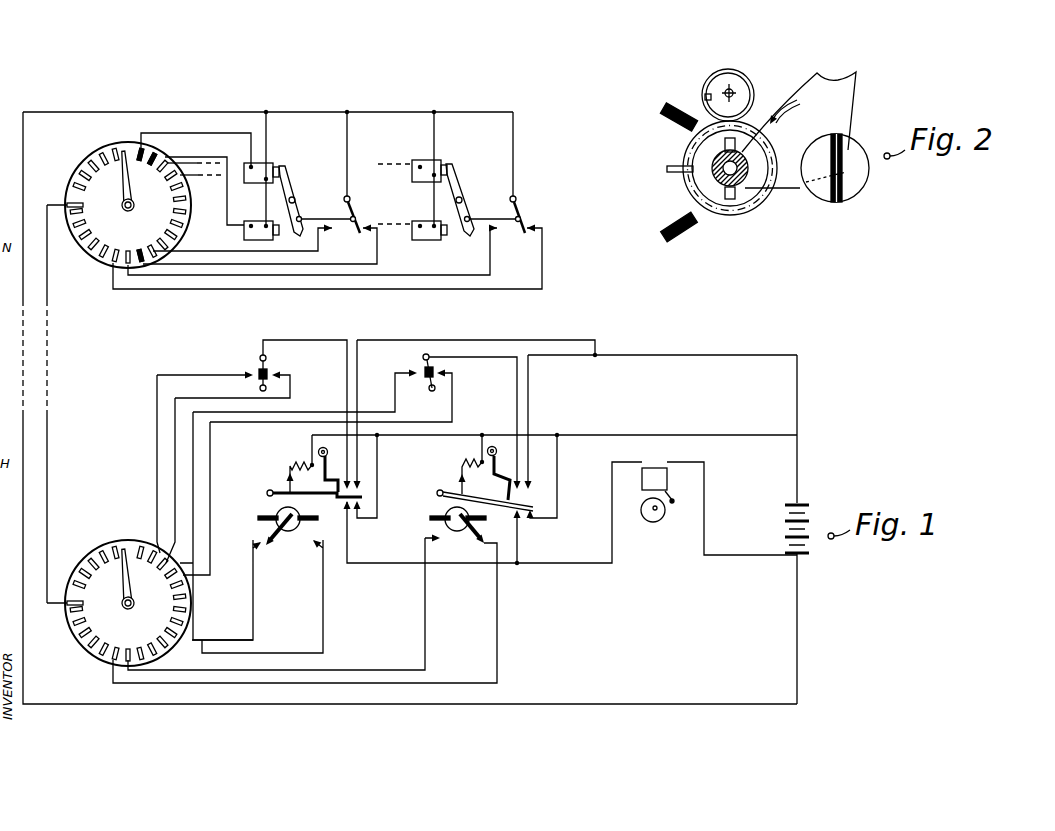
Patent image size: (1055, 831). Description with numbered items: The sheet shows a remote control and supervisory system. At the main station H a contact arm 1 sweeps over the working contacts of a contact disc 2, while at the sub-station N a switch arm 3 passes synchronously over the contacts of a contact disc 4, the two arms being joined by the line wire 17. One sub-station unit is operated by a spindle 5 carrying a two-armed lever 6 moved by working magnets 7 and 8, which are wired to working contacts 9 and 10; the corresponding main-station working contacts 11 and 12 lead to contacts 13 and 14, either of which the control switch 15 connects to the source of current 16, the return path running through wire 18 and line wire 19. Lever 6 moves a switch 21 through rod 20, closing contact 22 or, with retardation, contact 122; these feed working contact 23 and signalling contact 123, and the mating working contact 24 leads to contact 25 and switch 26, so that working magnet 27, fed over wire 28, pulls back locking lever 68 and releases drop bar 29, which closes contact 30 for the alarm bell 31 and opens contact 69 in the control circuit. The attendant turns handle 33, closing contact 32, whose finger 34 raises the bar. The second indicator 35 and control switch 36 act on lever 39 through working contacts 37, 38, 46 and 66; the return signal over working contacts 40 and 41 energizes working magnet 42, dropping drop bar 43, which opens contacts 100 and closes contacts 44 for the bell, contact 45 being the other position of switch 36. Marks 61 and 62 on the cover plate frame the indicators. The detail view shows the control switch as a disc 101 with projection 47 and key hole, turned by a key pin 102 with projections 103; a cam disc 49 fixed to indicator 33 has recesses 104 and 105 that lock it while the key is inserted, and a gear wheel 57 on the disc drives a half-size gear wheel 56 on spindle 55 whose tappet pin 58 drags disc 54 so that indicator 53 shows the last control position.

In FIG. 1, the contact arm 1 is at (130, 585).
In FIG. 1, the contact disc 2 is at (119, 629).
In FIG. 1, the switch arm 3 is at (128, 185).
In FIG. 1, the contact disc 4 is at (152, 222).
In FIG. 1, the spindle 5 is at (303, 204).
In FIG. 1, the two-armed lever 6 is at (292, 182).
In FIG. 1, the working magnet 7 is at (251, 165).
In FIG. 1, the working magnet 8 is at (245, 236).
In FIG. 1, the working contact 9 is at (141, 150).
In FIG. 1, the working contact 10 is at (162, 160).
In FIG. 1, the working contact 11 is at (150, 548).
In FIG. 1, the working contact 12 is at (168, 560).
In FIG. 1, the contact 13 is at (252, 373).
In FIG. 2, the contact 13 is at (668, 122).
In FIG. 1, the contact 14 is at (278, 377).
In FIG. 2, the contact 14 is at (670, 222).
In FIG. 1, the control switch 15 is at (258, 383).
In FIG. 1, the source of current 16 is at (785, 527).
In FIG. 1, the line wire 17 is at (47, 352).
In FIG. 1, the wire 18 is at (289, 143).
In FIG. 1, the line wire 19 is at (23, 352).
In FIG. 1, the rod 20 is at (330, 212).
In FIG. 1, the switch 21 is at (355, 208).
In FIG. 1, the contact 22 is at (332, 229).
In FIG. 1, the working contact 23 is at (160, 247).
In FIG. 1, the working contact 24 is at (155, 650).
In FIG. 1, the contact 25 is at (255, 549).
In FIG. 1, the switch 26 is at (272, 524).
In FIG. 1, the working magnet 27 is at (293, 463).
In FIG. 1, the wire 28 is at (598, 430).
In FIG. 1, the drop bar 29 is at (350, 489).
In FIG. 1, the contact 30 is at (347, 505).
In FIG. 1, the alarm bell 31 is at (648, 518).
In FIG. 1, the contact 32 is at (314, 543).
In FIG. 1, the handle 33 is at (280, 505).
In FIG. 2, the handle 33 is at (857, 150).
In FIG. 1, the finger 34 is at (296, 509).
In FIG. 1, the position indicator 35 is at (448, 527).
In FIG. 1, the control switch 36 is at (430, 360).
In FIG. 1, the working contact 37 is at (190, 600).
In FIG. 1, the working contact 38 is at (176, 177).
In FIG. 1, the lever 39 is at (460, 184).
In FIG. 1, the working contact 40 is at (112, 264).
In FIG. 1, the working contact 41 is at (110, 655).
In FIG. 1, the working magnet 42 is at (463, 464).
In FIG. 1, the drop bar 43 is at (500, 489).
In FIG. 1, the contacts 44 is at (528, 512).
In FIG. 1, the contact 45 is at (402, 373).
In FIG. 1, the working contact 46 is at (183, 578).
In FIG. 2, the projection 47 is at (670, 172).
In FIG. 2, the cam disc 49 is at (789, 113).
In FIG. 2, the indicator 53 is at (733, 90).
In FIG. 2, the drag disc 54 is at (722, 76).
In FIG. 2, the spindle 55 is at (733, 96).
In FIG. 2, the gear wheel 56 is at (735, 73).
In FIG. 2, the gear wheel 57 is at (690, 150).
In FIG. 2, the tappet pin 58 is at (705, 96).
In FIG. 1, the mark 61 is at (276, 515).
In FIG. 1, the mark 62 is at (445, 515).
In FIG. 1, the working contact 66 is at (166, 166).
In FIG. 1, the locking lever 68 is at (330, 462).
In FIG. 1, the contact 69 is at (360, 490).
In FIG. 1, the contacts 100 is at (523, 476).
In FIG. 2, the disc 101 is at (720, 208).
In FIG. 2, the pin 102 is at (735, 200).
In FIG. 2, the projections 103 is at (725, 192).
In FIG. 2, the recess 104 is at (748, 170).
In FIG. 2, the recess 105 is at (838, 82).
In FIG. 1, the contact 122 is at (368, 233).
In FIG. 1, the signalling contact 123 is at (141, 248).